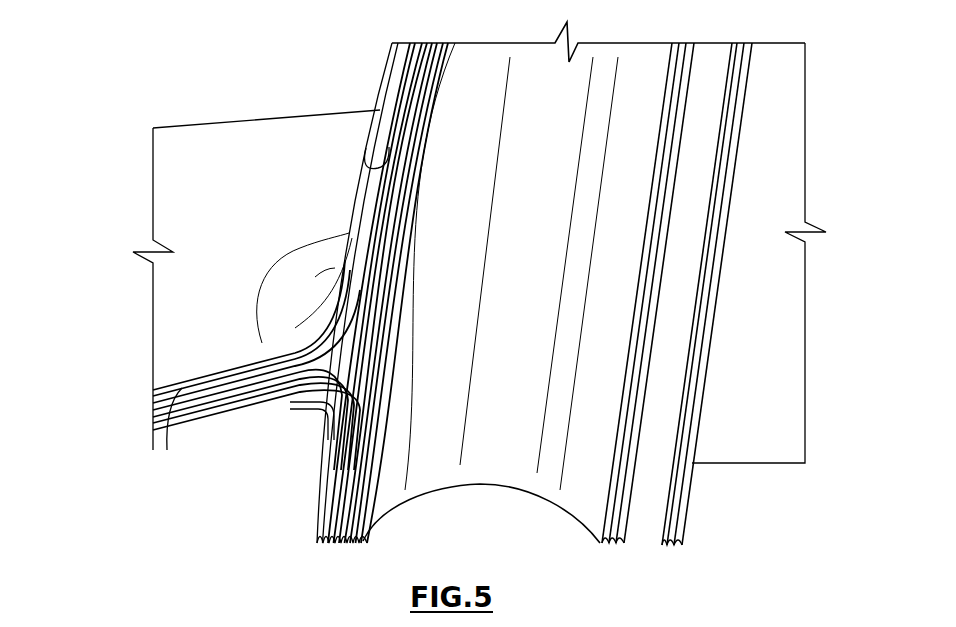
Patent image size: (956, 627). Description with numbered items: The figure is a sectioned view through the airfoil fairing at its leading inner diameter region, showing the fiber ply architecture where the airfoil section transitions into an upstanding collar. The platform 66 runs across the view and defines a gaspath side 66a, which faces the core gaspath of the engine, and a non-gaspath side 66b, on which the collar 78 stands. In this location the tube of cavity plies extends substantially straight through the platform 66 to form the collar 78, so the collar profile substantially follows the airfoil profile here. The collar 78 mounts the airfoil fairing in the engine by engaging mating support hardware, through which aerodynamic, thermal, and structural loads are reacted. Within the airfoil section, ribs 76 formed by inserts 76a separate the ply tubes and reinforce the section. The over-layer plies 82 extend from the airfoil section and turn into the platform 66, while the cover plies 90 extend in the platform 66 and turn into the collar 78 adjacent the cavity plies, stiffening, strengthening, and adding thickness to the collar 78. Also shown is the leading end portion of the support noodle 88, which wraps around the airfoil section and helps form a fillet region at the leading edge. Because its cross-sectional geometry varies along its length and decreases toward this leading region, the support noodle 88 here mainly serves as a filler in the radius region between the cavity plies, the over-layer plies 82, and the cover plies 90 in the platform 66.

The platform 66 is at (162, 441).
The gaspath side 66a is at (185, 343).
The non-gaspath side 66b is at (199, 445).
The rib 76 is at (650, 477).
The insert 76a is at (653, 450).
The collar 78 is at (307, 543).
The over-layer plies 82 is at (364, 167).
The support noodle 88 is at (353, 352).
The cover plies 90 is at (312, 530).